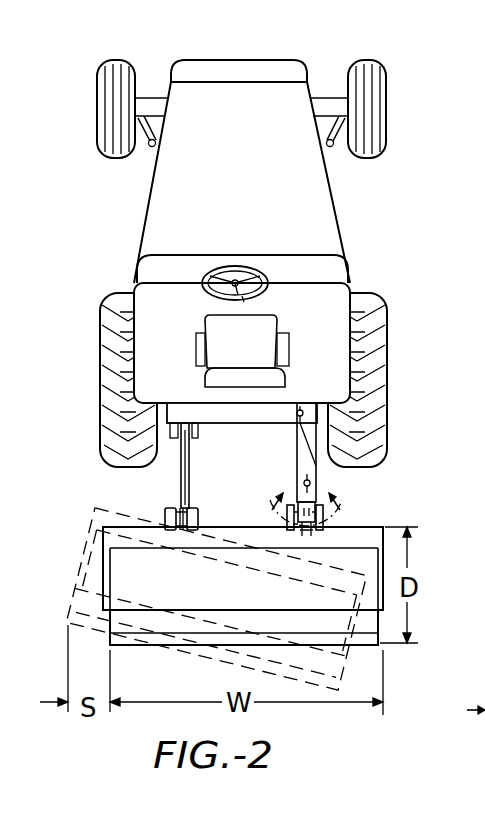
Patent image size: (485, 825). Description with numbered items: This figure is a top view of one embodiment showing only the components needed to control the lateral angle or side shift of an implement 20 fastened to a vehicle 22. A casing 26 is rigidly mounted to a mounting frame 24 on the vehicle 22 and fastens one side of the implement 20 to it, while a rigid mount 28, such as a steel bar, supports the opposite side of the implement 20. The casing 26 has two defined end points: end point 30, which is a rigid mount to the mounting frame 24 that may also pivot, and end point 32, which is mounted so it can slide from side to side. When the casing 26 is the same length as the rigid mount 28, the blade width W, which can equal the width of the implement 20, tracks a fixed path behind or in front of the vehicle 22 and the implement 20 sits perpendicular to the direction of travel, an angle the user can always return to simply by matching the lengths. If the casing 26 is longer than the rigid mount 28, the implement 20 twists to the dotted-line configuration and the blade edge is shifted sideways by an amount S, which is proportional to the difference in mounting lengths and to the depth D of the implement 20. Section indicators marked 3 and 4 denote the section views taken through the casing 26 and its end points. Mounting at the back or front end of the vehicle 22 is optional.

The implement 20 is at (372, 530).
The vehicle 22 is at (317, 198).
The mounting frame 24 is at (283, 413).
The casing 26 is at (305, 455).
The rigid mount 28 is at (181, 482).
The end point 30 is at (297, 443).
The end point 32 is at (338, 504).
The section line 3 indicator 3 is at (475, 558).
The section line 4-4 indicator 4 is at (307, 499).